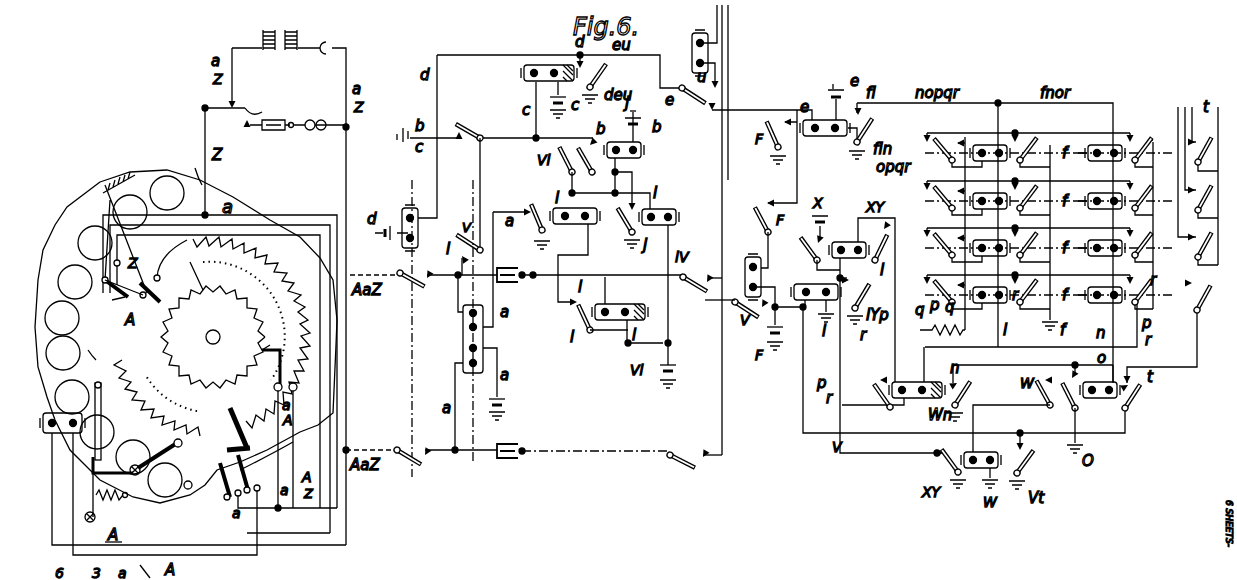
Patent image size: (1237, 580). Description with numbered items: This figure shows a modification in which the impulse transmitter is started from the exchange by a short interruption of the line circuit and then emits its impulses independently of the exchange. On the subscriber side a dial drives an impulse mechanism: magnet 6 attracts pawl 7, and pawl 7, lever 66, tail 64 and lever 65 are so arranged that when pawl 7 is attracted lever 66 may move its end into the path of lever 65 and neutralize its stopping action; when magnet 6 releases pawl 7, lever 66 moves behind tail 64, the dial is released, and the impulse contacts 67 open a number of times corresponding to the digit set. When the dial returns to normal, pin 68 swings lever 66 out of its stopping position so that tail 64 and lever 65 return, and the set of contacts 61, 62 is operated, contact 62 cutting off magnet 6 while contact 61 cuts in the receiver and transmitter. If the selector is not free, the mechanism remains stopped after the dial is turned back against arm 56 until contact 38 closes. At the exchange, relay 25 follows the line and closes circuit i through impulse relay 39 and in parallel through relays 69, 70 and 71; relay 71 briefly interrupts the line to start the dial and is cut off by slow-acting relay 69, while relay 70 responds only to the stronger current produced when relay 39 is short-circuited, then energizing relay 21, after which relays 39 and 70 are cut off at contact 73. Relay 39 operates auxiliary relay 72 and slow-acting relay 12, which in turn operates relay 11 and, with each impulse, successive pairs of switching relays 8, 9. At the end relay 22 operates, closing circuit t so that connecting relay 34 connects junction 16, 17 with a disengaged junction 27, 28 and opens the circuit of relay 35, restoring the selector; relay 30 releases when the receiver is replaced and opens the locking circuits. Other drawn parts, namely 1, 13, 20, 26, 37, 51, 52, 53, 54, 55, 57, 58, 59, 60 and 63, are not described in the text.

The dial mechanism 1 is at (165, 184).
The magnet 6 is at (62, 423).
The pawl 7 is at (85, 345).
The switching relay 8 is at (1105, 228).
The first auxiliary relay 9 is at (990, 228).
The relay 11 is at (1093, 399).
The relay 12 is at (905, 398).
The contact 13 is at (251, 99).
The junction 16 is at (532, 280).
The junction 17 is at (597, 458).
The relay 20 is at (405, 209).
The relay 21 is at (641, 154).
The relay 22 is at (982, 469).
The relay 25 is at (462, 340).
The line conductor 26 is at (705, 24).
The junction 27 is at (729, 26).
The junction 28 is at (730, 47).
The relay 30 is at (549, 63).
The connecting relay 34 is at (692, 55).
The relay 35 is at (820, 118).
The relay 37 is at (746, 276).
The contact 38 is at (761, 202).
The impulse relay 39 is at (812, 284).
The gear wheel 51 is at (220, 333).
The dotted arc 52 is at (219, 336).
The ratchet wheel 53 is at (212, 336).
The arm 54 is at (268, 368).
The pawl 55 is at (190, 262).
The arm 56 is at (116, 229).
The conductor 57 is at (191, 161).
The contact blade 58 is at (130, 294).
The contact 59 is at (105, 305).
The dial plate 60 is at (48, 268).
The contact 61 is at (225, 495).
The contact 62 is at (276, 448).
The pawl 63 is at (248, 428).
The tail 64 is at (102, 405).
The lever 65 is at (98, 503).
The lever 66 is at (158, 455).
The impulse contacts 67 is at (262, 352).
The pin 68 is at (183, 445).
The relay 69 is at (626, 304).
The relay 70 is at (672, 212).
The relay 71 is at (573, 225).
The auxiliary relay 72 is at (851, 241).
The contact 73 is at (558, 176).